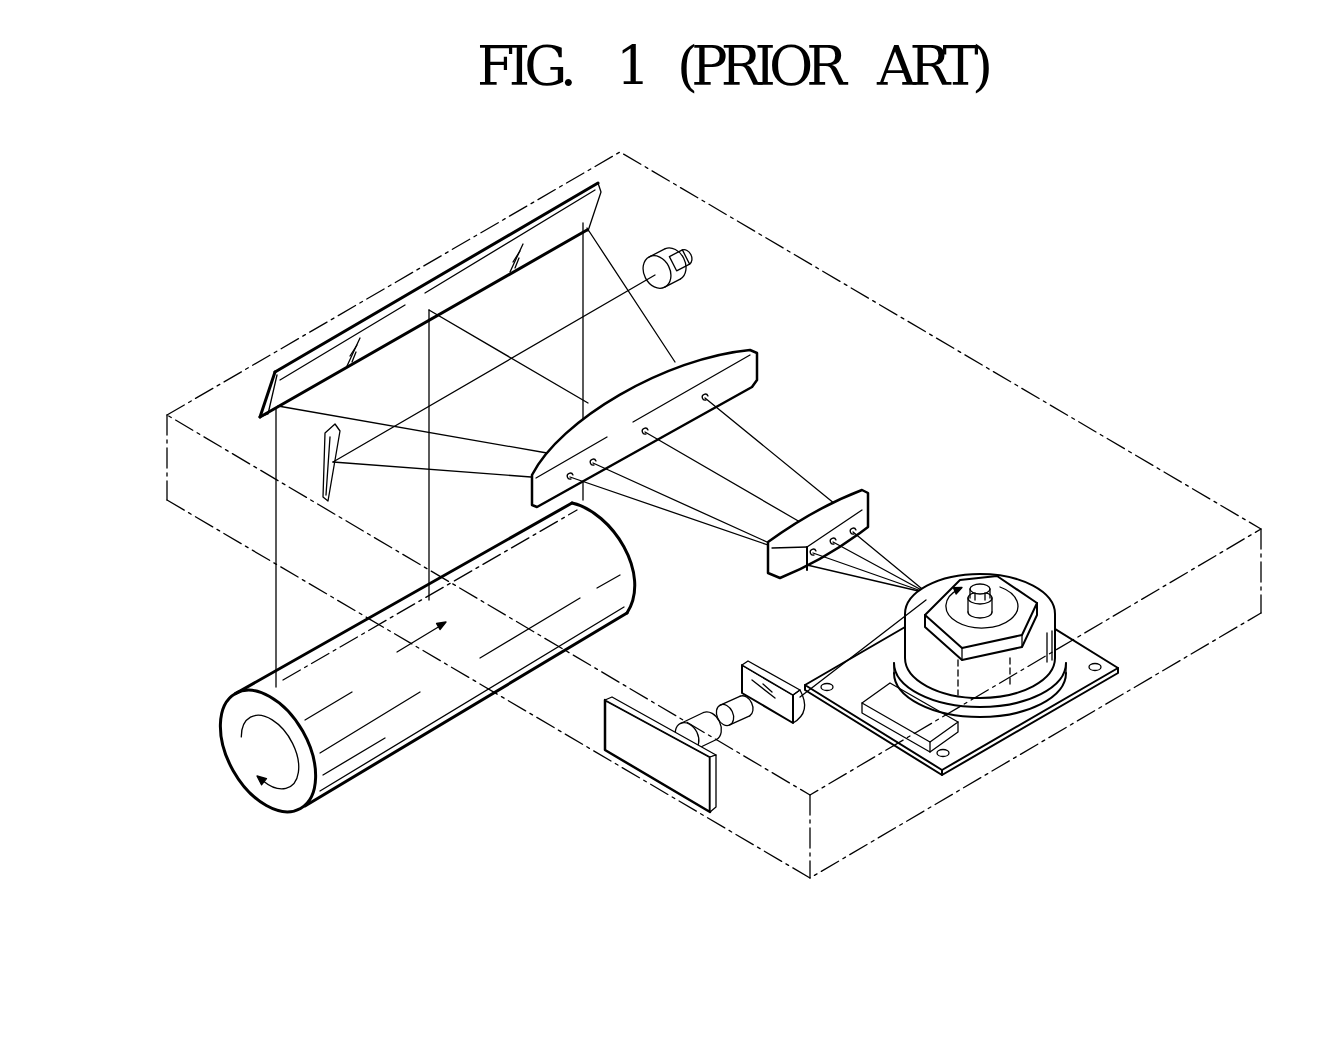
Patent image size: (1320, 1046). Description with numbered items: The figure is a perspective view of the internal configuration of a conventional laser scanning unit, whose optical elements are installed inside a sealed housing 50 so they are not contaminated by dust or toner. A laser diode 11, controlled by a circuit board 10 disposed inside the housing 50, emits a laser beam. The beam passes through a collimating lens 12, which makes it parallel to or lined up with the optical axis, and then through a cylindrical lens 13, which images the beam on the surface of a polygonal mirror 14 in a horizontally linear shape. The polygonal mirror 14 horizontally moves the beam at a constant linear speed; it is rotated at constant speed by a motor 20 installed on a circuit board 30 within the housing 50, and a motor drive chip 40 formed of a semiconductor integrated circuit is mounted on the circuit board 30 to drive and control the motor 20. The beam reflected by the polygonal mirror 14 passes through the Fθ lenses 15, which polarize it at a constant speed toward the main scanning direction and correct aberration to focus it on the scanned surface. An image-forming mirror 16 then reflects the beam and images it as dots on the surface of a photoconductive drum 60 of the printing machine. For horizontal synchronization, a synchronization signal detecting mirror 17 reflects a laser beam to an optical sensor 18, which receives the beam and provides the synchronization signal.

The circuit board 10 is at (662, 773).
The laser diode 11 is at (722, 737).
The collimating lens 12 is at (750, 716).
The cylindrical lens 13 is at (797, 723).
The polygonal mirror 14 is at (1022, 615).
The Fθ lenses 15 is at (757, 365).
The image-forming mirror 16 is at (573, 190).
The synchronization signal detecting mirror 17 is at (323, 477).
The optical sensor 18 is at (688, 258).
The motor 20 is at (1027, 677).
The circuit board 30 is at (990, 745).
The motor drive chip 40 is at (928, 733).
The housing 50 is at (1177, 480).
The photoconductive drum 60 is at (387, 743).